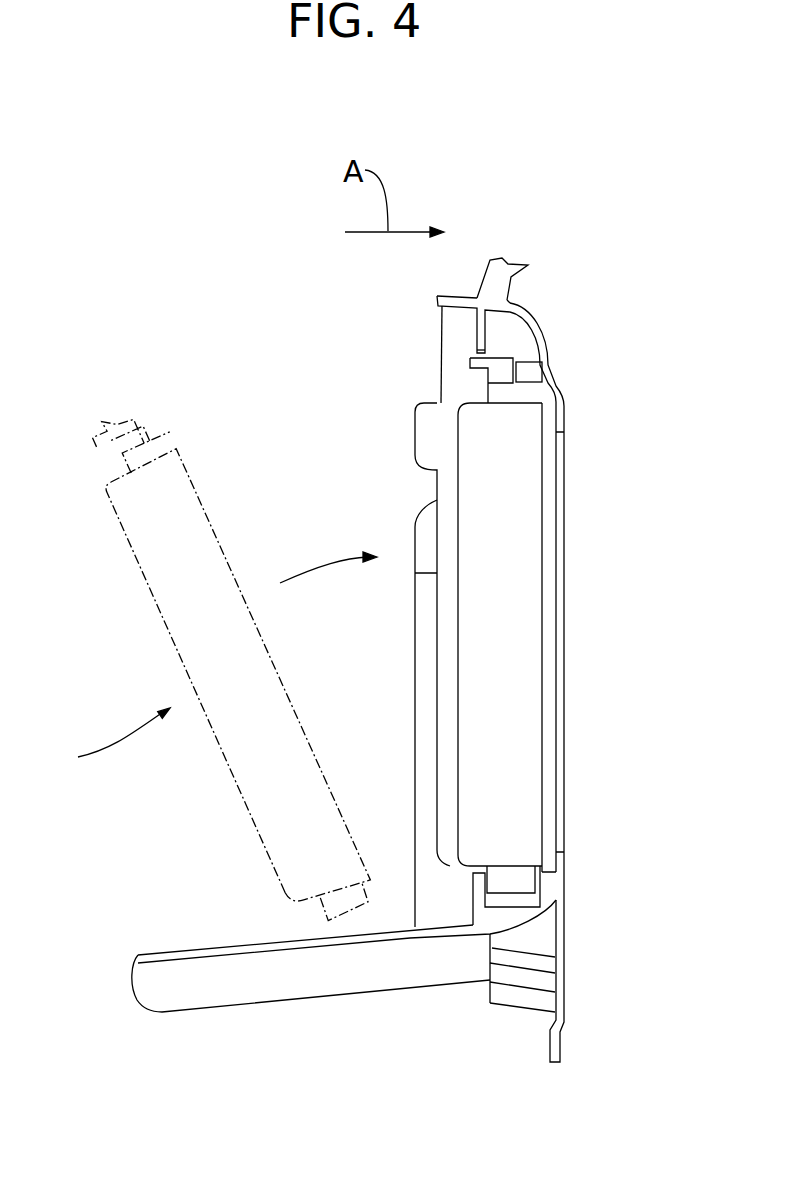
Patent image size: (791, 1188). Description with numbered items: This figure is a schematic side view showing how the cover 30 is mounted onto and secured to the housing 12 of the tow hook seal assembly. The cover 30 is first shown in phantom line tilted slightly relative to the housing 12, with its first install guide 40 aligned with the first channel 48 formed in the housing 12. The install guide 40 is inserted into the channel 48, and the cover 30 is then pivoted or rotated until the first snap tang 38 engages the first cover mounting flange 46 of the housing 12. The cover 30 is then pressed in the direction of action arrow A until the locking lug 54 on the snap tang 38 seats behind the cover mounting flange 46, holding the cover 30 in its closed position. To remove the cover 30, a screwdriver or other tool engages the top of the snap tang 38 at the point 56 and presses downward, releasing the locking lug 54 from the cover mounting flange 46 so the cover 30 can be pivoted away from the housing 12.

The housing 12 is at (552, 832).
The cover 30 is at (507, 598).
The first snap tang 38 is at (513, 360).
The first install guide 40 is at (517, 882).
The first cover mounting flange 46 is at (483, 331).
The first channel 48 is at (502, 907).
The locking lug 54 is at (487, 351).
The point 56 is at (472, 358).